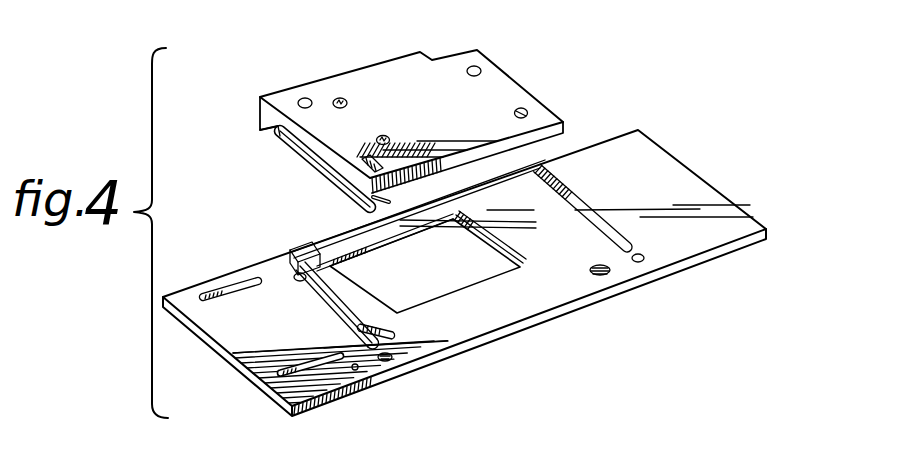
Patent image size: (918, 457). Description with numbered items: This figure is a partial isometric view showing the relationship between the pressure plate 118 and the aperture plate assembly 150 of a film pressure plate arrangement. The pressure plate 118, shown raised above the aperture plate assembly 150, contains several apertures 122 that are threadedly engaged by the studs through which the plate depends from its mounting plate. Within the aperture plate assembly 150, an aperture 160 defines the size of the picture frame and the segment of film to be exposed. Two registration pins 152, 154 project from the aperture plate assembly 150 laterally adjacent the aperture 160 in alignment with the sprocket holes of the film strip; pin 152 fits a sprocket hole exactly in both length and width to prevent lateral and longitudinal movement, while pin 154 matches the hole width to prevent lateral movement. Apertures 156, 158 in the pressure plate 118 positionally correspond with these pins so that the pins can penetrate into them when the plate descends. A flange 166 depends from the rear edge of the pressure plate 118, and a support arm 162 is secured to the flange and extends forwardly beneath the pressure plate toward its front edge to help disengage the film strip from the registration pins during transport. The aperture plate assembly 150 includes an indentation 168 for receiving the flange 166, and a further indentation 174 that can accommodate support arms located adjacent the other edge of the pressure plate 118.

The pressure plate 118 is at (512, 90).
The apertures 122 is at (384, 135).
The aperture plate assembly 150 is at (667, 248).
The registration pin 152 is at (302, 276).
The registration pin 154 is at (363, 325).
The aperture 156 is at (306, 98).
The aperture 158 is at (386, 156).
The aperture 160 is at (470, 278).
The support arm 162 is at (322, 188).
The flange 166 is at (270, 130).
The indentation 168 is at (272, 265).
The indentation 174 is at (580, 205).